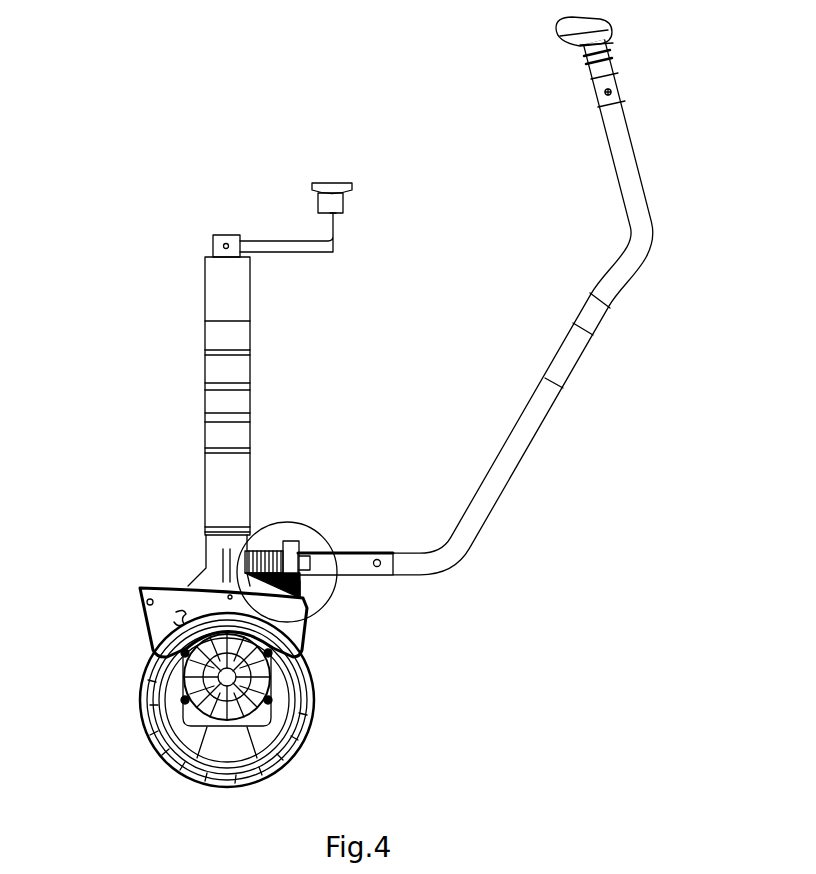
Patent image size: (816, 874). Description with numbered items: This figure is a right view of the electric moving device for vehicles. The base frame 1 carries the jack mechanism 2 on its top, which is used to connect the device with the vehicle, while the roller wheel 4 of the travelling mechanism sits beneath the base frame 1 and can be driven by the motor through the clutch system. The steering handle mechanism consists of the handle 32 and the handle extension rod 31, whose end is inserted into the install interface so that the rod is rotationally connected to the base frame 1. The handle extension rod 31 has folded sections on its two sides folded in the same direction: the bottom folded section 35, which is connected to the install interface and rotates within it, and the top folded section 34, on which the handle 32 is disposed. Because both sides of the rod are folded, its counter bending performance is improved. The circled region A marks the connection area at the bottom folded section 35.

The base frame 1 is at (192, 535).
The jack mechanism 2 is at (227, 335).
The roller wheel 4 is at (147, 697).
The handle extension rod 31 is at (548, 400).
The handle 32 is at (608, 72).
The top folded section 34 is at (630, 168).
The bottom folded section 35 is at (360, 567).
The detail area A is at (290, 522).